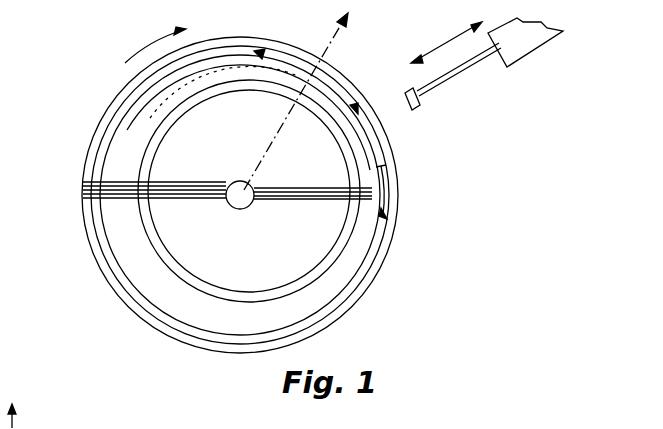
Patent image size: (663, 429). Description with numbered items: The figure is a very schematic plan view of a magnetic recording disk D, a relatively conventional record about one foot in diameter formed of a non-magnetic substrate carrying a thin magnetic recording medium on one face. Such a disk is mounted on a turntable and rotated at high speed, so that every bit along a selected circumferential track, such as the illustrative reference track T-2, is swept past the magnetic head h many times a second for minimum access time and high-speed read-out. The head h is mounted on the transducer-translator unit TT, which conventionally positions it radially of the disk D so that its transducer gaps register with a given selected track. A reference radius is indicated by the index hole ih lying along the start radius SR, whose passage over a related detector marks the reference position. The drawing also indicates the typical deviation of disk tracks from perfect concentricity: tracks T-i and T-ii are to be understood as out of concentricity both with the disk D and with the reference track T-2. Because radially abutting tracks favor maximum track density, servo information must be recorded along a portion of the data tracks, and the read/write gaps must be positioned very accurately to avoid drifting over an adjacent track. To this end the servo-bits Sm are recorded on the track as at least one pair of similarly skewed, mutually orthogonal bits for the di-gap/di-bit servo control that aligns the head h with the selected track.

The magnetic recording disk D is at (93, 119).
The start radius SR is at (312, 99).
The index hole ih is at (253, 168).
The reference track T-2 is at (382, 180).
The servo-bits Sm is at (380, 203).
The track T-i is at (163, 262).
The track T-ii is at (162, 246).
The magnetic head h is at (420, 102).
The transducer-translator unit TT is at (537, 52).